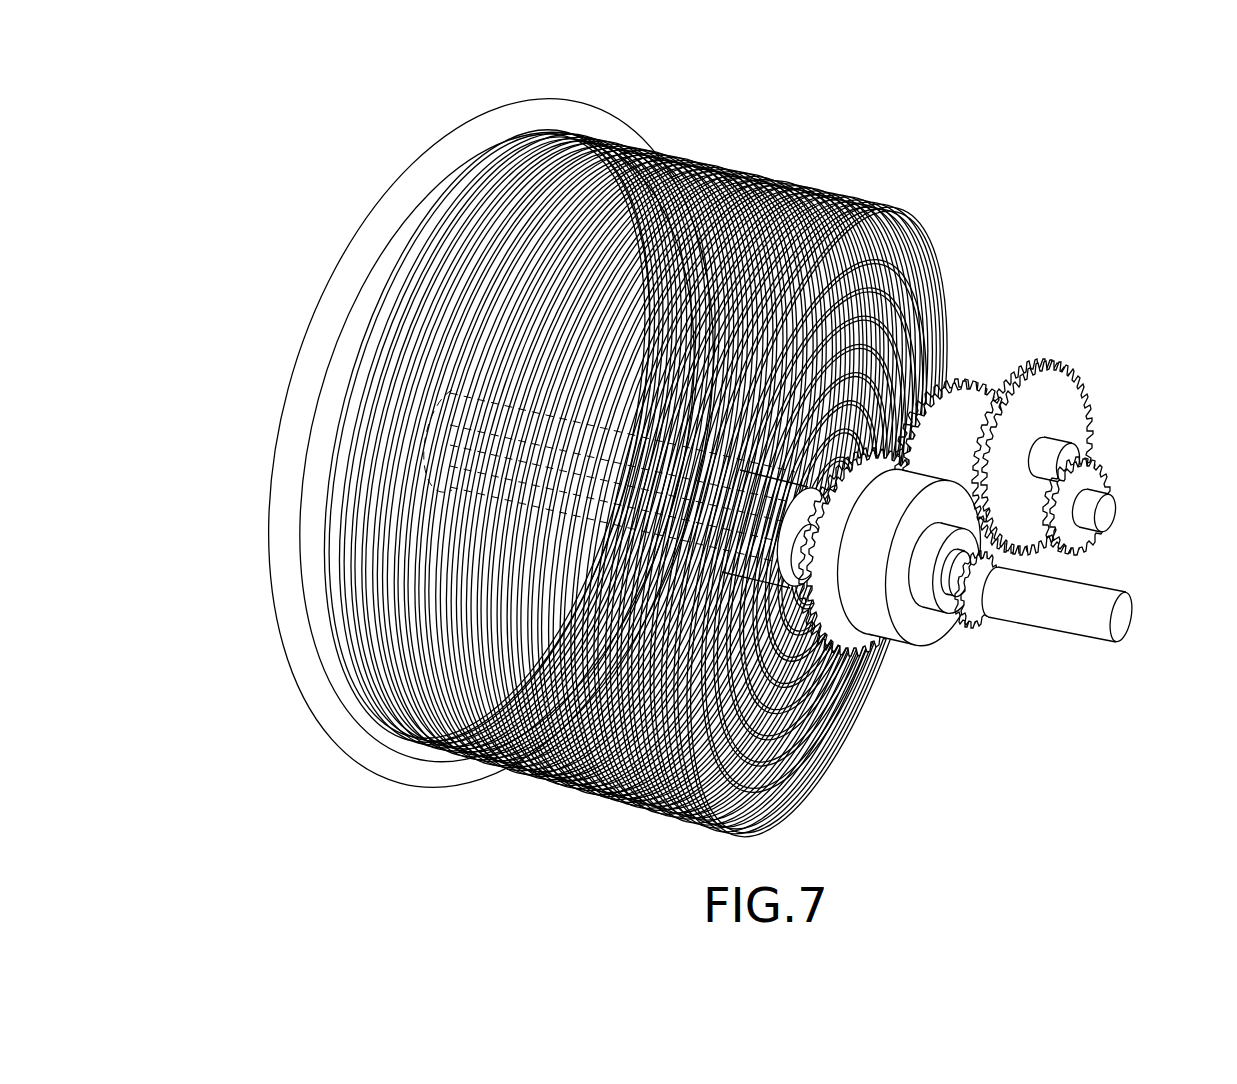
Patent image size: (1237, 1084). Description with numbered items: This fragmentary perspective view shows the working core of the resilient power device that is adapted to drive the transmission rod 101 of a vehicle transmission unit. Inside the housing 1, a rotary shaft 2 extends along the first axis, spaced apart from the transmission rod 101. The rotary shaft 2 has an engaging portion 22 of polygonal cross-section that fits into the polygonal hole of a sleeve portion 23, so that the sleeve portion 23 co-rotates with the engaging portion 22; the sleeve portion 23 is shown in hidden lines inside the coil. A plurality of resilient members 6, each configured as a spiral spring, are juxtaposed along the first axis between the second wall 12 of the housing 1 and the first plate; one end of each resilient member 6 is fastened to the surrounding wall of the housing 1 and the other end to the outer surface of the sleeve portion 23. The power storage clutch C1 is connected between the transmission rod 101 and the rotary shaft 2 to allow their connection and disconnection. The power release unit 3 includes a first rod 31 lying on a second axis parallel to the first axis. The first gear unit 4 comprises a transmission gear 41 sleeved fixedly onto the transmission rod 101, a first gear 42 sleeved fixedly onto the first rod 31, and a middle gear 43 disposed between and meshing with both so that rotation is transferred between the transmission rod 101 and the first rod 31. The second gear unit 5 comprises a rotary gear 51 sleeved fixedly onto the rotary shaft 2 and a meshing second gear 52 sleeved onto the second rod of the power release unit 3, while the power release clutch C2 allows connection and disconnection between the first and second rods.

The housing 1 is at (598, 455).
The second wall 12 is at (412, 157).
The resilient member 6 is at (836, 208).
The sleeve portion 23 is at (428, 405).
The rotary shaft 2 is at (783, 574).
The engaging portion 22 is at (807, 560).
The second gear unit 5 is at (916, 490).
The rotary gear 51 is at (827, 627).
The second gear 52 is at (975, 385).
The power storage clutch C1 is at (930, 632).
The first gear unit 4 is at (1060, 486).
The middle gear 43 is at (1075, 375).
The power release clutch C2 is at (1027, 383).
The first gear 42 is at (1100, 470).
The transmission gear 41 is at (998, 612).
The power release unit 3 is at (1144, 497).
The first rod 31 is at (1112, 512).
The transmission rod 101 is at (1108, 603).